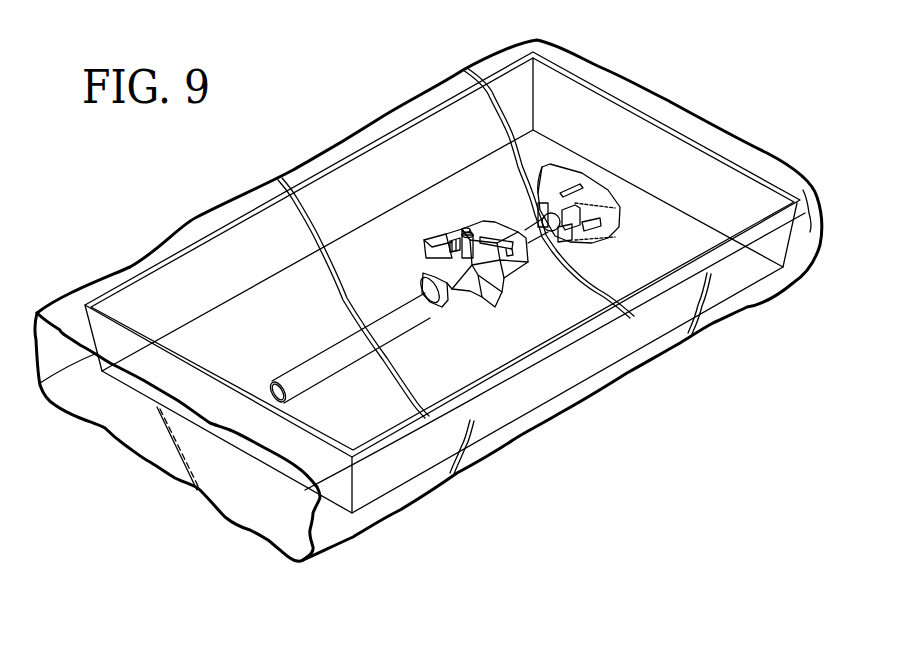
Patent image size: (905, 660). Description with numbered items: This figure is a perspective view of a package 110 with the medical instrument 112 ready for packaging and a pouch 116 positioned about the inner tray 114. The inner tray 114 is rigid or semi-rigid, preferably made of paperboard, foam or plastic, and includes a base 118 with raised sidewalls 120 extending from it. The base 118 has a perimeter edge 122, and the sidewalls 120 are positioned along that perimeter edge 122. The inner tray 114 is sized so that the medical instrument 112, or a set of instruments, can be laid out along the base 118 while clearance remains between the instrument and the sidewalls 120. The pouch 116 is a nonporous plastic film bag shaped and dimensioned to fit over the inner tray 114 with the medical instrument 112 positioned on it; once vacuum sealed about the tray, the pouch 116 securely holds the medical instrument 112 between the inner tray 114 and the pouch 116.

The package 110 is at (129, 217).
The medical instrument 112 is at (445, 247).
The inner tray 114 is at (283, 438).
The pouch 116 is at (347, 530).
The base 118 is at (213, 332).
The sidewalls 120 is at (420, 467).
The perimeter edge 122 is at (547, 415).